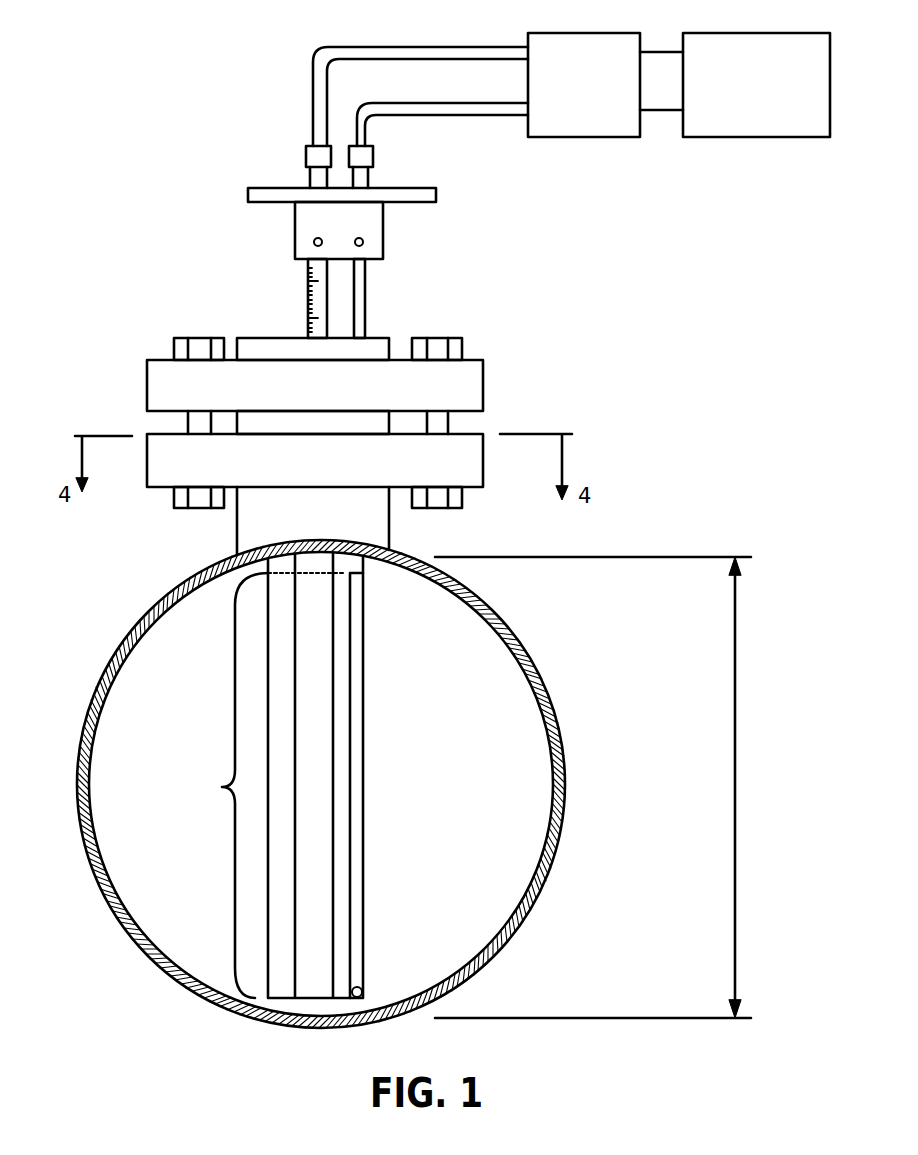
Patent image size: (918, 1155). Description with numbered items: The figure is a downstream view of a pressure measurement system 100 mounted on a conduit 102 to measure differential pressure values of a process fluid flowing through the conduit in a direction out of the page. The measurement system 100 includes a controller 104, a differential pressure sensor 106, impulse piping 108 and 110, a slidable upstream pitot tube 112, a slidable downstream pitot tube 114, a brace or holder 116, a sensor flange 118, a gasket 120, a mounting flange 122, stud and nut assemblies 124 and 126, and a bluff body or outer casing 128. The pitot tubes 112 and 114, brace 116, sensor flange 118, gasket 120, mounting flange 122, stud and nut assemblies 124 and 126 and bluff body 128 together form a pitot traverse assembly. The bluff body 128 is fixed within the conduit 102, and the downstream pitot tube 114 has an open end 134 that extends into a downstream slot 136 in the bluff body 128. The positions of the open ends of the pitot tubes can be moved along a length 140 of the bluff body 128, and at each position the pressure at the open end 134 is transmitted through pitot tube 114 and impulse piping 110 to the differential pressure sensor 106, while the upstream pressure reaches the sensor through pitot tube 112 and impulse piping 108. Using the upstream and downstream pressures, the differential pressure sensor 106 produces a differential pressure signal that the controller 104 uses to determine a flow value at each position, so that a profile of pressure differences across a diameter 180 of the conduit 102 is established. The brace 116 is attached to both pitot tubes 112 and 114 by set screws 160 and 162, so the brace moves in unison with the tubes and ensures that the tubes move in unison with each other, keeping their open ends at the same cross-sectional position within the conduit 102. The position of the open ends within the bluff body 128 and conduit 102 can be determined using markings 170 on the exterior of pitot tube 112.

The pressure measurement system 100 is at (160, 117).
The conduit 102 is at (556, 707).
The controller 104 is at (737, 137).
The differential pressure sensor 106 is at (577, 137).
The impulse piping 108 is at (313, 104).
The impulse piping 110 is at (366, 128).
The slidable upstream pitot tube 112 is at (308, 304).
The slidable downstream pitot tube 114 is at (365, 315).
The brace or holder 116 is at (436, 196).
The sensor flange 118 is at (483, 372).
The gasket 120 is at (450, 421).
The mounting flange 122 is at (483, 453).
The stud and nut assembly 124 is at (200, 509).
The stud and nut assembly 126 is at (427, 509).
The bluff body or outer casing 128 is at (267, 665).
The open end 134 is at (363, 991).
The downstream slot 136 is at (357, 823).
The length 140 is at (222, 785).
The set screw 160 is at (314, 242).
The set screw 162 is at (364, 240).
The markings 170 is at (313, 281).
The diameter 180 is at (593, 787).